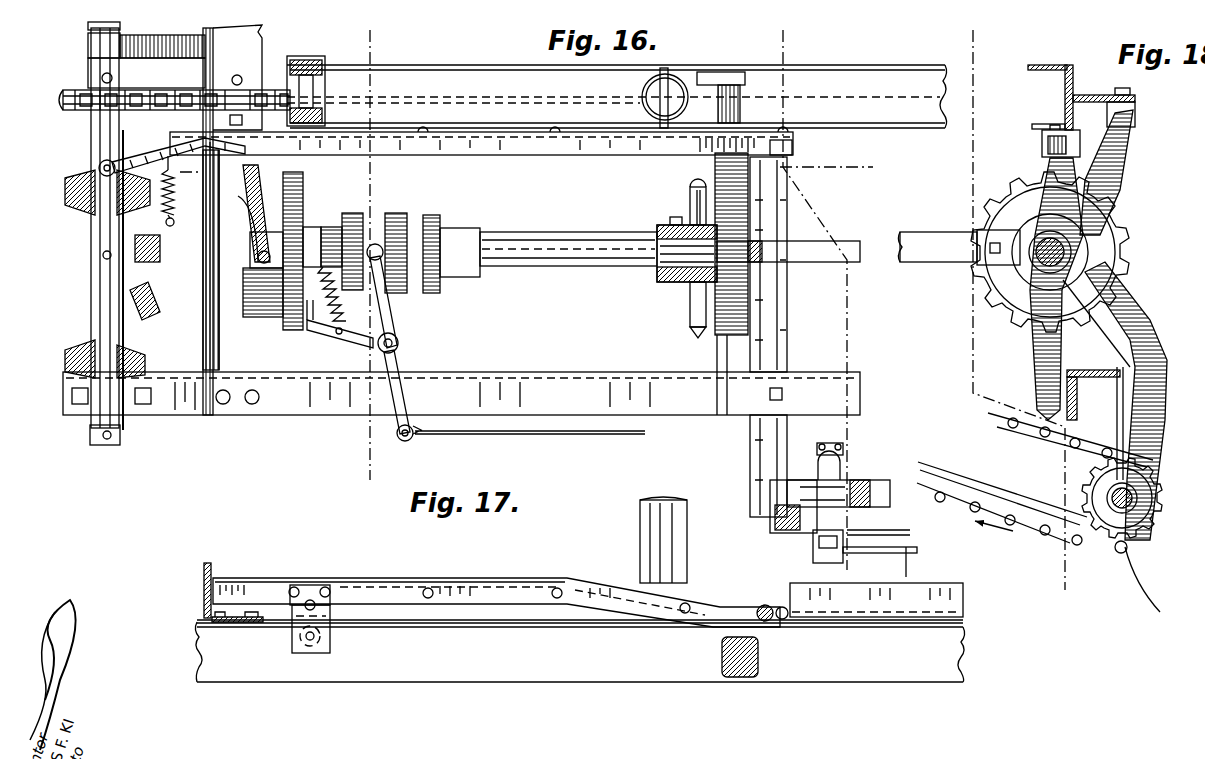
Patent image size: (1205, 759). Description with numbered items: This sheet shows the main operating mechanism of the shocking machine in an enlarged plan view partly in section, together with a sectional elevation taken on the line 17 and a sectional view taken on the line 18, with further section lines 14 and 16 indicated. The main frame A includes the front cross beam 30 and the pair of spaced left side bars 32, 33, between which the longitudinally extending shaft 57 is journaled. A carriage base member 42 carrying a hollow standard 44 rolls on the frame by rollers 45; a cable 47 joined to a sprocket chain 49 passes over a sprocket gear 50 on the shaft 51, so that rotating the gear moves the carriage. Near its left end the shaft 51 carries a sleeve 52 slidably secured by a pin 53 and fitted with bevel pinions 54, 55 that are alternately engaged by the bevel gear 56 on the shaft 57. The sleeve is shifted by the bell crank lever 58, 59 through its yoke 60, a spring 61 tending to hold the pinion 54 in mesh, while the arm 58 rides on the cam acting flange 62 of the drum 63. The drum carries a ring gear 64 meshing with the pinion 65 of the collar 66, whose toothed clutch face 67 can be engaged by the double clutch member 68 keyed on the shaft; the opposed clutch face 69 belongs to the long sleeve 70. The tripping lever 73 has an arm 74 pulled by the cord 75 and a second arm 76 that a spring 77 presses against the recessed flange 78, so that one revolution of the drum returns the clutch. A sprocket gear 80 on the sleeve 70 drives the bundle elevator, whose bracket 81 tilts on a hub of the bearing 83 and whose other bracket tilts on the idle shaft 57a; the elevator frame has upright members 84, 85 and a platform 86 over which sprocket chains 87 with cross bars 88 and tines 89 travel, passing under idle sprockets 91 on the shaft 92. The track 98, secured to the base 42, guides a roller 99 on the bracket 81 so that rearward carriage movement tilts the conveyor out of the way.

In FIG. 16, the section line 14- 14 is at (357, 43).
In FIG. 16, the section line 16- 16 is at (955, 43).
In FIG. 16, the section line 17- 17 is at (187, 174).
In FIG. 16, the section line 18- 18 is at (770, 47).
In FIG. 16, the front cross beam 30 is at (216, 350).
In FIG. 17, the front cross beam 30 is at (203, 571).
In FIG. 16, the left side bar 32 is at (268, 68).
In FIG. 17, the left side bar 32 is at (382, 673).
In FIG. 18, the left side bar 32 is at (1079, 98).
In FIG. 16, the left side bar 33 is at (281, 416).
In FIG. 18, the left side bar 33 is at (1105, 379).
In FIG. 16, the carriage base member 42 is at (712, 66).
In FIG. 17, the carriage base member 42 is at (945, 596).
In FIG. 16, the hollow standard 44 is at (668, 72).
In FIG. 17, the hollow standard 44 is at (665, 538).
In FIG. 16, the rollers 45 is at (313, 68).
In FIG. 16, the cable 47 is at (883, 95).
In FIG. 16, the sprocket chain 49 is at (80, 112).
In FIG. 16, the sprocket gear 50 is at (63, 98).
In FIG. 16, the shaft 51 is at (108, 446).
In FIG. 16, the sleeve 52 is at (90, 235).
In FIG. 16, the pin 53 is at (104, 256).
In FIG. 16, the bevel pinion 54 is at (70, 190).
In FIG. 16, the bevel pinion 55 is at (70, 356).
In FIG. 16, the bevel gear 56 is at (150, 308).
In FIG. 16, the longitudinal shaft 57 is at (150, 262).
In FIG. 16, the idle shaft 57a is at (822, 244).
In FIG. 18, the idle shaft 57a is at (1036, 262).
In FIG. 16, the bell crank lever arm 58 is at (253, 222).
In FIG. 16, the bell crank lever arm 59 is at (180, 147).
In FIG. 16, the yoke 60 is at (100, 161).
In FIG. 16, the spring 61 is at (164, 180).
In FIG. 16, the cam acting flange 62 is at (270, 302).
In FIG. 16, the drum 63 is at (328, 173).
In FIG. 16, the ring gear 64 is at (292, 182).
In FIG. 16, the pinion 65 is at (307, 226).
In FIG. 16, the collar 66 is at (320, 240).
In FIG. 16, the toothed clutch face 67 is at (350, 215).
In FIG. 16, the double clutch member 68 is at (393, 215).
In FIG. 16, the clutch face 69 is at (433, 216).
In FIG. 16, the long sleeve 70 is at (548, 235).
In FIG. 16, the tripping lever 73 is at (393, 320).
In FIG. 16, the lever arm 74 is at (398, 397).
In FIG. 16, the cord 75 is at (580, 436).
In FIG. 16, the lever arm 76 is at (355, 337).
In FIG. 16, the spring 77 is at (340, 312).
In FIG. 16, the flange 78 is at (310, 318).
In FIG. 16, the sprocket gear 80 is at (688, 182).
In FIG. 18, the sprocket gear 80 is at (1122, 234).
In FIG. 16, the bracket 81 is at (781, 332).
In FIG. 17, the bracket 81 is at (758, 657).
In FIG. 18, the bracket 81 is at (1140, 417).
In FIG. 16, the bearing 83 is at (722, 342).
In FIG. 18, the bearing 83 is at (1115, 168).
In FIG. 16, the upright member 84 is at (804, 265).
In FIG. 18, the upright member 84 is at (940, 254).
In FIG. 16, the upright member 85 is at (790, 534).
In FIG. 18, the upright member 85 is at (972, 484).
In FIG. 16, the platform 86 is at (878, 531).
In FIG. 16, the sprocket chain 87 is at (840, 450).
In FIG. 18, the sprocket chain 87 is at (1040, 519).
In FIG. 18, the cross bar 88 is at (1120, 553).
In FIG. 16, the tine 89 is at (909, 570).
In FIG. 18, the tine 89 is at (1150, 592).
In FIG. 16, the idle sprocket 91 is at (843, 471).
In FIG. 18, the idle sprocket 91 is at (1112, 512).
In FIG. 16, the shaft 92 is at (870, 486).
In FIG. 18, the shaft 92 is at (1115, 495).
In FIG. 16, the track 98 is at (558, 146).
In FIG. 17, the track 98 is at (545, 577).
In FIG. 18, the track 98 is at (1070, 140).
In FIG. 16, the roller 99 is at (772, 148).
In FIG. 17, the roller 99 is at (772, 621).
In FIG. 18, the roller 99 is at (1043, 145).
In FIG. 16, the main frame A is at (191, 424).